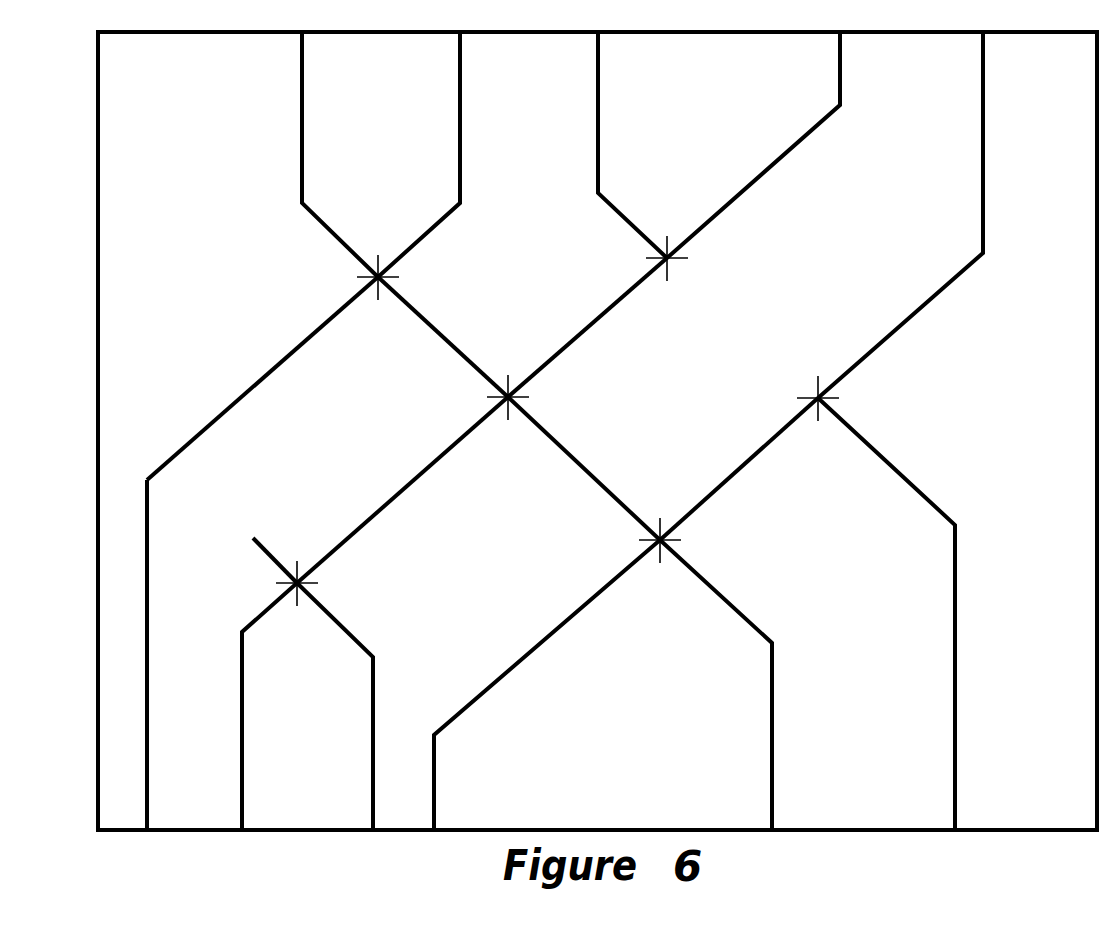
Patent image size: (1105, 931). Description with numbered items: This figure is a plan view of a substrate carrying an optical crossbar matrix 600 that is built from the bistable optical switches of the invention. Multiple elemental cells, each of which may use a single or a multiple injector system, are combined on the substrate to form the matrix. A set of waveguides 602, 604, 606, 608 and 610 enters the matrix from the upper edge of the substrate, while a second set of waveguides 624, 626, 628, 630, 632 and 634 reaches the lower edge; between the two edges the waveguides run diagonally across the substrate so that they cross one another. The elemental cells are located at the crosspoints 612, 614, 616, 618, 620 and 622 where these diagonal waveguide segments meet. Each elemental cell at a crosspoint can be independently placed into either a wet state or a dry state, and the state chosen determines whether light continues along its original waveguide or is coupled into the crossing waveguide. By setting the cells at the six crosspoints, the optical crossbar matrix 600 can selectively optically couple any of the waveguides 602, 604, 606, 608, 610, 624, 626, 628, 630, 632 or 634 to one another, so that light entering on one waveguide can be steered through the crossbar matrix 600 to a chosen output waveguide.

The optical crossbar matrix 600 is at (204, 128).
The waveguide 602 is at (346, 86).
The waveguide 604 is at (461, 103).
The waveguide 606 is at (598, 95).
The waveguide 608 is at (840, 93).
The waveguide 610 is at (985, 94).
The crosspoint 612 is at (403, 273).
The crosspoint 614 is at (676, 266).
The crosspoint 616 is at (533, 398).
The crosspoint 618 is at (836, 391).
The crosspoint 620 is at (322, 583).
The crosspoint 622 is at (688, 543).
The waveguide 624 is at (150, 781).
The waveguide 626 is at (245, 782).
The waveguide 628 is at (375, 735).
The waveguide 630 is at (436, 790).
The waveguide 632 is at (774, 773).
The waveguide 634 is at (957, 776).